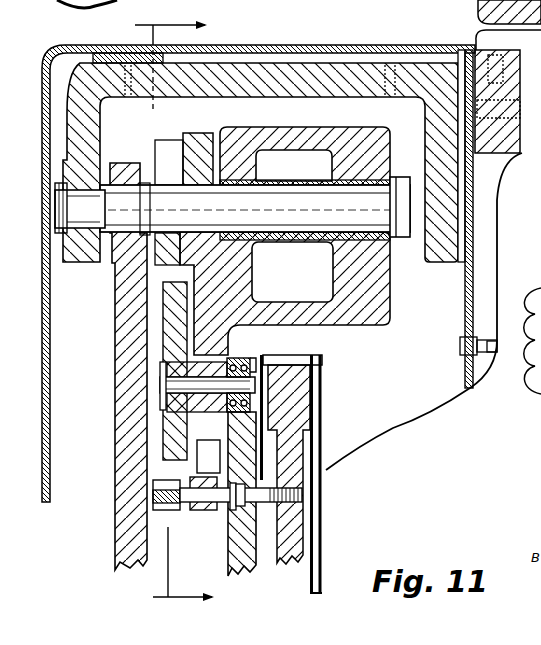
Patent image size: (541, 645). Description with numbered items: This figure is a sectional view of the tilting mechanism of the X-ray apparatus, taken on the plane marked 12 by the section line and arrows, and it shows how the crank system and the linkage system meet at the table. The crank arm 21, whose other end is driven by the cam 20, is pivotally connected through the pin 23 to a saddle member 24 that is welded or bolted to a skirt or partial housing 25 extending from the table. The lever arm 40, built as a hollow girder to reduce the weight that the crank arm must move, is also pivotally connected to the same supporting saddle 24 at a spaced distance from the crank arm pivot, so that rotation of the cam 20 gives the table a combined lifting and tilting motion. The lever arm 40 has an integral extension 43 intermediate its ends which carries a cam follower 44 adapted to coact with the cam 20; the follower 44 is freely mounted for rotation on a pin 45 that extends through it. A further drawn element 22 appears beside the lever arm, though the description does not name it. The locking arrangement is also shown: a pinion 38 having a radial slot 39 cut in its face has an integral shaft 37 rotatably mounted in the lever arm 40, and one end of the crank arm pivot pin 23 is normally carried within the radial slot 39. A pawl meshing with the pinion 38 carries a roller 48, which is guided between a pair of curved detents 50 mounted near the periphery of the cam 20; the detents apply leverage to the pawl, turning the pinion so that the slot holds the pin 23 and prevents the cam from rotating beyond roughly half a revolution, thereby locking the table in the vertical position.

The section plane 12- 12 is at (186, 317).
The cam 20 is at (232, 554).
The crank arm 21 is at (115, 333).
The pulley 22 is at (322, 372).
The pin 23 is at (116, 201).
The saddle member 24 is at (99, 108).
The skirt or partial housing 25 is at (270, 43).
The shaft 37 is at (340, 187).
The pinion 38 is at (183, 134).
The radial slot 39 is at (167, 144).
The lever arm 40 is at (380, 132).
The integral extension 43 is at (228, 357).
The cam follower 44 is at (250, 358).
The pin 45 is at (207, 387).
The roller 48 is at (215, 512).
The curved detents 50 is at (200, 438).